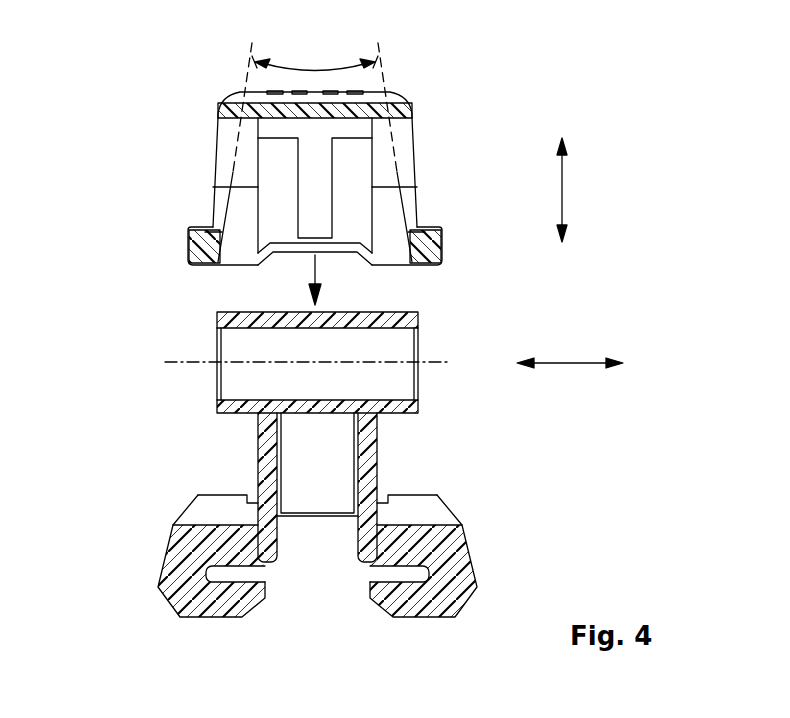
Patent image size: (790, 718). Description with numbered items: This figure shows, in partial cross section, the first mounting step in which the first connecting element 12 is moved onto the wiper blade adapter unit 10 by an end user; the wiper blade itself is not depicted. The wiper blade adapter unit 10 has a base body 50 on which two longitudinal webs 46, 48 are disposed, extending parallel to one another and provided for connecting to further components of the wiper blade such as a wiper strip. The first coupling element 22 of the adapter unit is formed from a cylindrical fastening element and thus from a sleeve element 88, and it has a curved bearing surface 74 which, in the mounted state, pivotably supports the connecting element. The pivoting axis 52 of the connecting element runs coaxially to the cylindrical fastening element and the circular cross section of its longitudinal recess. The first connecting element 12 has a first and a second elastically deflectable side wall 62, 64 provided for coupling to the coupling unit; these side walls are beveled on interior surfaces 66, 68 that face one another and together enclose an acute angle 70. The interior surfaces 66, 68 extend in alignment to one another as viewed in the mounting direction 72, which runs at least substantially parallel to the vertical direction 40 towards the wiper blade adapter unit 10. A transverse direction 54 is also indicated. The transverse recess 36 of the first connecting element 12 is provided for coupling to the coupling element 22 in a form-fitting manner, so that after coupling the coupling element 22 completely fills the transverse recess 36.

The wiper blade adapter unit 10 is at (113, 327).
The first connecting element 12 is at (197, 60).
The first coupling element 22 is at (402, 411).
The transverse recess 36 is at (400, 134).
The vertical direction 40 is at (565, 192).
The longitudinal web 46 is at (465, 557).
The longitudinal web 48 is at (170, 557).
The base body 50 is at (372, 480).
The pivoting axis 52 is at (203, 364).
The horizontal direction of movement 54 is at (567, 368).
The first elastically deflectable side wall 62 is at (412, 198).
The second elastically deflectable side wall 64 is at (221, 193).
The interior surface 66 is at (412, 222).
The interior surface 68 is at (218, 222).
The acute angle 70 is at (318, 62).
The mounting direction 72 is at (318, 272).
The curved bearing surface 74 is at (252, 312).
The sleeve element 88 is at (237, 411).